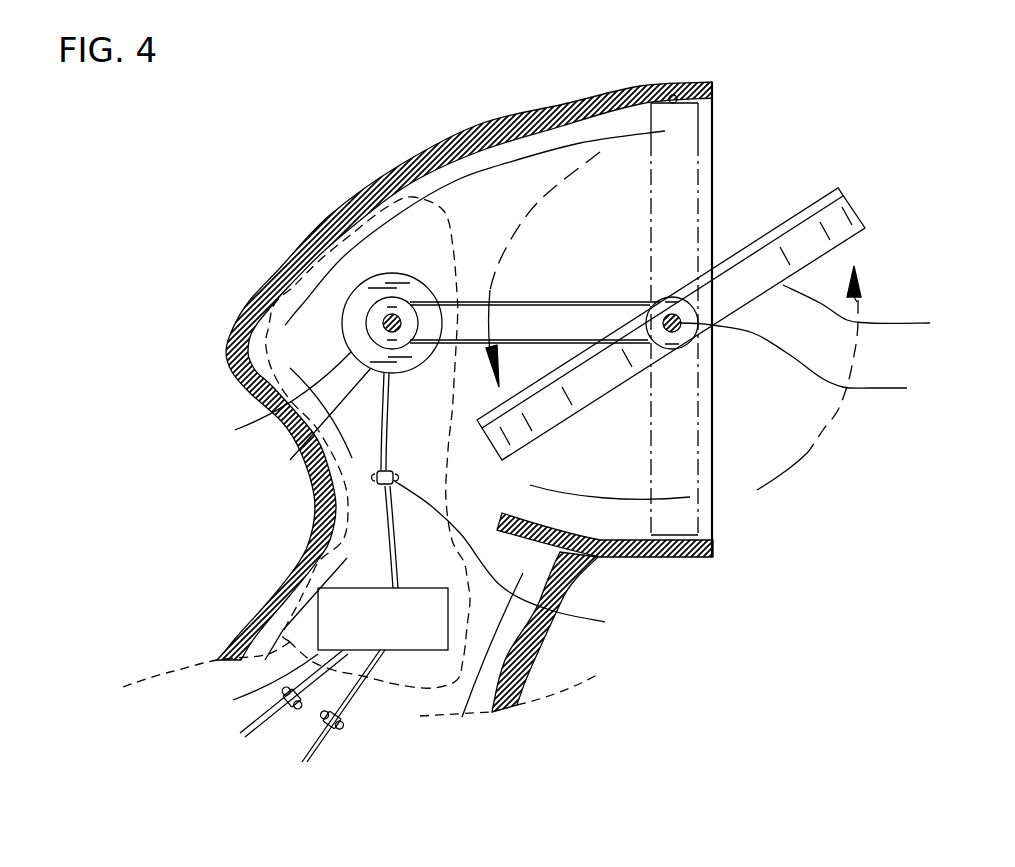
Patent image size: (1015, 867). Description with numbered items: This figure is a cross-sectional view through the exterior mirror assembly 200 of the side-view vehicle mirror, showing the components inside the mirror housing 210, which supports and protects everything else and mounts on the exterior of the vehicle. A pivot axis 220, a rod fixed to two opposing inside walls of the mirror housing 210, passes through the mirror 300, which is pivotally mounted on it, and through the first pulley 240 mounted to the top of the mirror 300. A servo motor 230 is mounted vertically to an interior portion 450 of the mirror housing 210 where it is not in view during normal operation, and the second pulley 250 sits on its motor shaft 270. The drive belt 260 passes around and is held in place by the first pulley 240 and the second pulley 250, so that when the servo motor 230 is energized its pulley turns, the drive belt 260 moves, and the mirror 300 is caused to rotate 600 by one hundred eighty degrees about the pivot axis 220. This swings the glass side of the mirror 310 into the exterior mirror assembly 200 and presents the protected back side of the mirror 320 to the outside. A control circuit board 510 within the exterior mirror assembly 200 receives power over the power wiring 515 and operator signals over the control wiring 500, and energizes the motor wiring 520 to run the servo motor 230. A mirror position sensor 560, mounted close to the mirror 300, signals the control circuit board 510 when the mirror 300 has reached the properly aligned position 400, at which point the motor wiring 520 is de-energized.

The exterior mirror assembly 200 is at (850, 82).
The mirror housing 210 is at (248, 305).
The pivot axis 220 is at (821, 363).
The servo motor 230 is at (235, 430).
The first pulley 240 is at (700, 300).
The second pulley 250 is at (290, 460).
The drive belt 260 is at (543, 300).
The motor shaft 270 is at (392, 323).
The mirror 300 is at (865, 200).
The glass side of the mirror 310 is at (839, 188).
The protected back side of the mirror 320 is at (882, 311).
The properly aligned position 400 is at (698, 522).
The interior portion of the mirror housing 450 is at (282, 630).
The control wiring 500 is at (340, 725).
The control circuit board 510 is at (233, 700).
The power wiring 515 is at (294, 707).
The motor wiring 520 is at (517, 555).
The mirror position sensor 560 is at (678, 93).
The rotate 600 is at (820, 378).